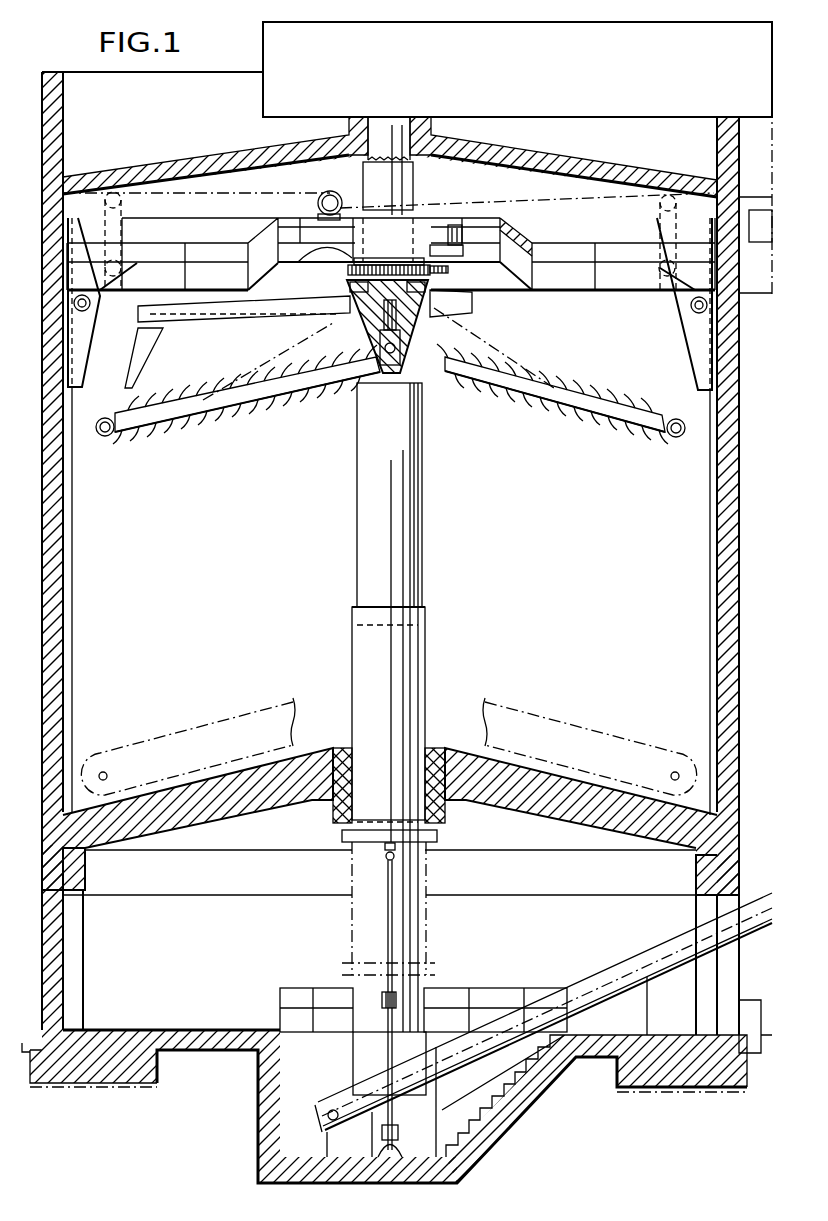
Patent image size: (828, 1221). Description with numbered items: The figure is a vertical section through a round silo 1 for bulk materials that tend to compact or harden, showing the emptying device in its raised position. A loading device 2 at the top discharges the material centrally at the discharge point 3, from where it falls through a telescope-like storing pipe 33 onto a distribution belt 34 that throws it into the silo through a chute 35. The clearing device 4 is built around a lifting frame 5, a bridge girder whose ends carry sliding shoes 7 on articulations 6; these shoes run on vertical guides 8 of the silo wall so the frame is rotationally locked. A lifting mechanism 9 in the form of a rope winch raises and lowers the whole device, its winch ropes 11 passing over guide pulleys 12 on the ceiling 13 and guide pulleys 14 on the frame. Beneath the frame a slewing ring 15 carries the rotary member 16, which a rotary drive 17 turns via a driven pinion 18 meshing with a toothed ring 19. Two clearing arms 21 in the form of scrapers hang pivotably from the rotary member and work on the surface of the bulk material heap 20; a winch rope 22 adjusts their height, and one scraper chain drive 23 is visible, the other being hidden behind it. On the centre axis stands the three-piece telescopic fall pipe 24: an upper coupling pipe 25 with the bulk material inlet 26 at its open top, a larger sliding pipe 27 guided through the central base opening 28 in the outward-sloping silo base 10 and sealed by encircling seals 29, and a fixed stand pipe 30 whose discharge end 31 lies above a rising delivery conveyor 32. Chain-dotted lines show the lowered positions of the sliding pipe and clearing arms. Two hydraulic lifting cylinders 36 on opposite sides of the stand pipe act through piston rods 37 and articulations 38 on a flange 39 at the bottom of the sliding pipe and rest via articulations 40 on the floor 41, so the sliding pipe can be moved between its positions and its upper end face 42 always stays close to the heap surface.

The round silo 1 is at (52, 478).
The loading device 2 is at (607, 40).
The discharge point 3 is at (393, 130).
The clearing device 4 is at (521, 225).
The lifting frame 5 is at (580, 292).
The articulations 6 is at (74, 303).
The sliding shoes 7 is at (80, 330).
The vertical guides 8 is at (70, 403).
The lifting mechanism 9 is at (333, 197).
The silo base 10 is at (557, 785).
The winch ropes 11 is at (190, 190).
The guide pulleys 12 is at (113, 192).
The ceiling 13 is at (605, 170).
The guide pulleys 14 is at (113, 285).
The slewing ring 15 is at (333, 262).
The rotary member 16 is at (470, 318).
The rotary drive 17 is at (449, 225).
The driven pinion 18 is at (449, 270).
The toothed ring 19 is at (348, 268).
The bulk material heap 20 is at (535, 546).
The clearing arms 21 is at (265, 388).
The winch rope 22 is at (275, 357).
The drive 23 is at (378, 318).
The telescopic fall pipe 24 is at (348, 569).
The coupling pipe 25 is at (425, 483).
The bulk material inlet 26 is at (390, 374).
The sliding pipe 27 is at (425, 656).
The base opening 28 is at (322, 748).
The encircling seals 29 is at (437, 748).
The stand pipe 30 is at (415, 975).
The discharge end 31 is at (365, 1065).
The delivery conveyor 32 is at (590, 975).
The storing pipe 33 is at (431, 163).
The distribution belt 34 is at (212, 316).
The chute 35 is at (145, 355).
The hydraulic lifting cylinders 36 is at (386, 1020).
The piston rods 37 is at (386, 920).
The articulations 38 is at (385, 852).
The flange 39 is at (342, 835).
The articulations 40 is at (470, 1162).
The floor 41 is at (276, 1167).
The upper end face 42 is at (425, 608).